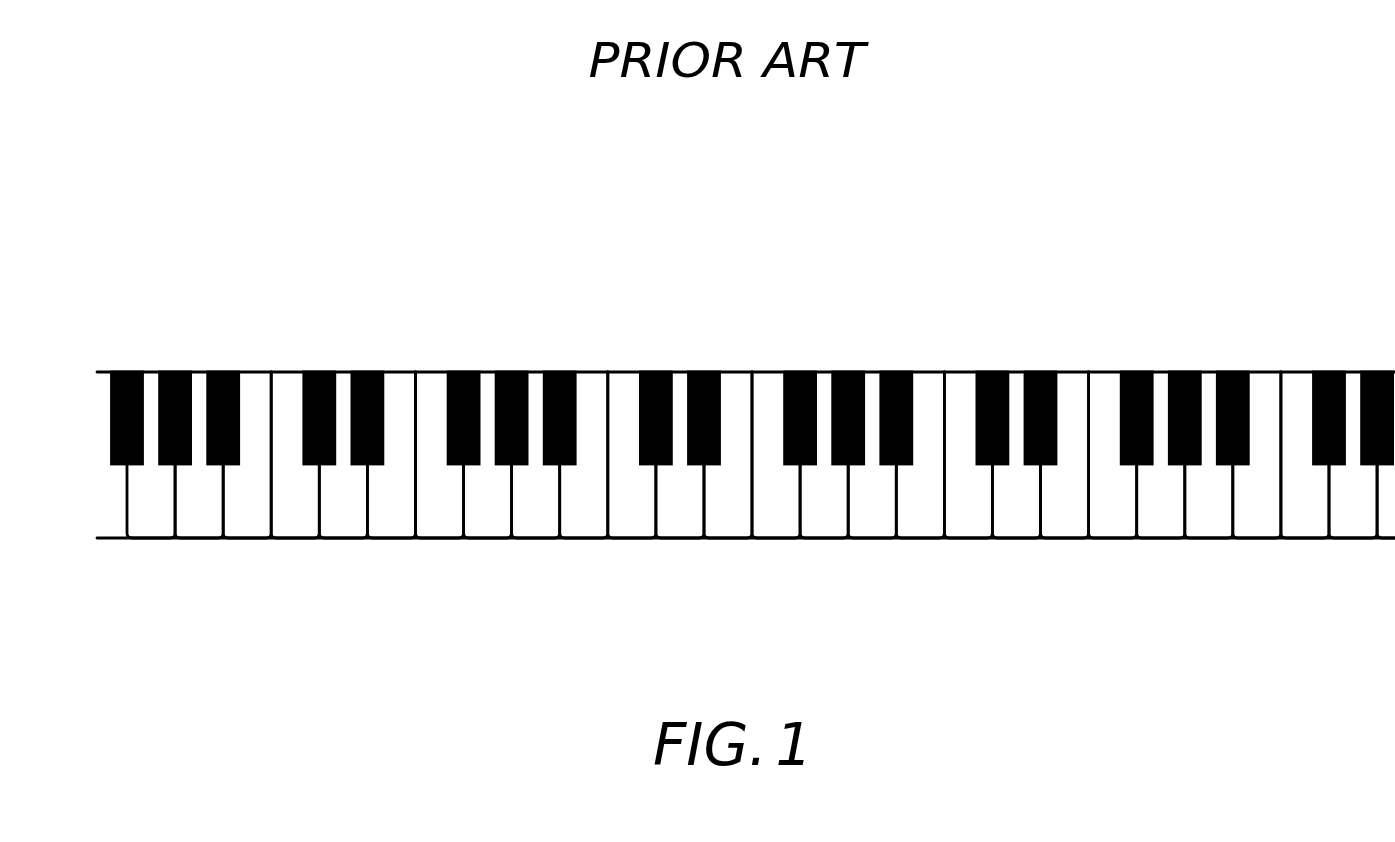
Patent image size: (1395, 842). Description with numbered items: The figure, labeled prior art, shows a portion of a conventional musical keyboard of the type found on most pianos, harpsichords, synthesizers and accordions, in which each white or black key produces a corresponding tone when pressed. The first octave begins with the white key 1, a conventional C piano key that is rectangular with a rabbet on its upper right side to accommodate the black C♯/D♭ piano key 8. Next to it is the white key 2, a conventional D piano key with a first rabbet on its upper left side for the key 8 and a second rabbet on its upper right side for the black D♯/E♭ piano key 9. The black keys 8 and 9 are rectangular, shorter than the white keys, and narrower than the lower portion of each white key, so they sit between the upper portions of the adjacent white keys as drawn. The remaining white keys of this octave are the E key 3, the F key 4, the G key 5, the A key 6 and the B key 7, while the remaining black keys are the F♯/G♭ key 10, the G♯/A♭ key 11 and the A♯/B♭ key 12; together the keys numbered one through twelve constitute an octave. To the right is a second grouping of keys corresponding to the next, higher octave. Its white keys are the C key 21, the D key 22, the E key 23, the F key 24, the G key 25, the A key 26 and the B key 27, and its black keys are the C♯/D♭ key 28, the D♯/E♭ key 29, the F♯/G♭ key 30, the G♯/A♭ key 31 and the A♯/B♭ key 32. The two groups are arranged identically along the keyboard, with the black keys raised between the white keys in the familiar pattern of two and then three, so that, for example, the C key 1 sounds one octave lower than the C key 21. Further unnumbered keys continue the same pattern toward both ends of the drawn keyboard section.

The white key 1 is at (292, 527).
The white key 2 is at (340, 528).
The E key 3 is at (385, 530).
The F key 4 is at (438, 530).
The G key 5 is at (487, 530).
The A key 6 is at (535, 530).
The B key 7 is at (588, 528).
The C♯/D♭ piano key 8 is at (318, 371).
The D♯/E♭ piano key 9 is at (373, 371).
The F♯/G♭ key 10 is at (462, 371).
The G♯/A♭ key 11 is at (512, 371).
The A♯/B♭ key 12 is at (562, 371).
The C key 21 is at (638, 525).
The D key 22 is at (680, 528).
The E key 23 is at (732, 528).
The F key 24 is at (773, 530).
The G key 25 is at (820, 532).
The A key 26 is at (868, 530).
The B key 27 is at (923, 527).
The C♯/D♭ key 28 is at (657, 371).
The D♯/E♭ key 29 is at (705, 371).
The F♯/G♭ key 30 is at (800, 371).
The G♯/A♭ key 31 is at (848, 371).
The A♯/B♭ key 32 is at (897, 371).